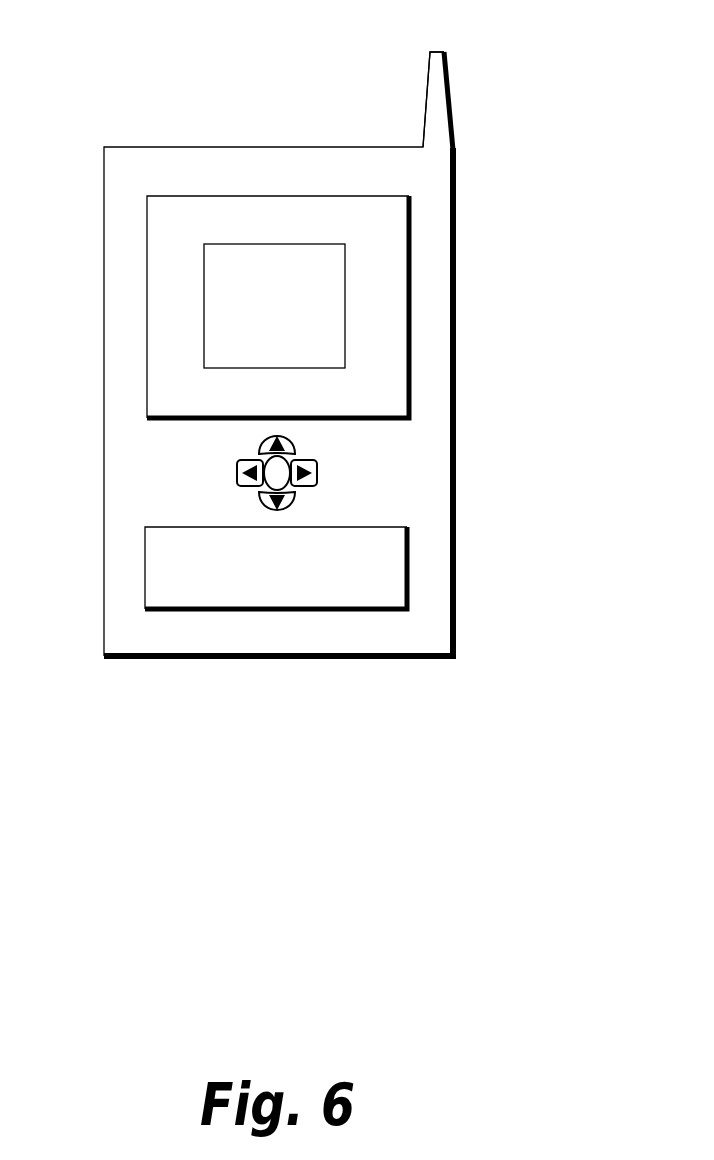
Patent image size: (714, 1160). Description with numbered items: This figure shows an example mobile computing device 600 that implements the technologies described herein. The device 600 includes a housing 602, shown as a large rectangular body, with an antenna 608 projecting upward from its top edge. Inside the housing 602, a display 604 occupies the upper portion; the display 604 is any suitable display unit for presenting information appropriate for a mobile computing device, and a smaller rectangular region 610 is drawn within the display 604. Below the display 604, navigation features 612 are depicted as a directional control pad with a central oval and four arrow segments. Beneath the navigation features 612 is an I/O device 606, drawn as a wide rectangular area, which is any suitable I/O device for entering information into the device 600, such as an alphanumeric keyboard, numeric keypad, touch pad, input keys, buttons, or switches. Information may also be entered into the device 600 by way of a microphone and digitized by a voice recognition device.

The device 600 is at (120, 71).
The housing 602 is at (457, 404).
The display 604 is at (414, 219).
The I/O device 606 is at (414, 562).
The antenna 608 is at (422, 94).
The display window / image region 610 is at (354, 325).
The navigation features 612 is at (321, 472).